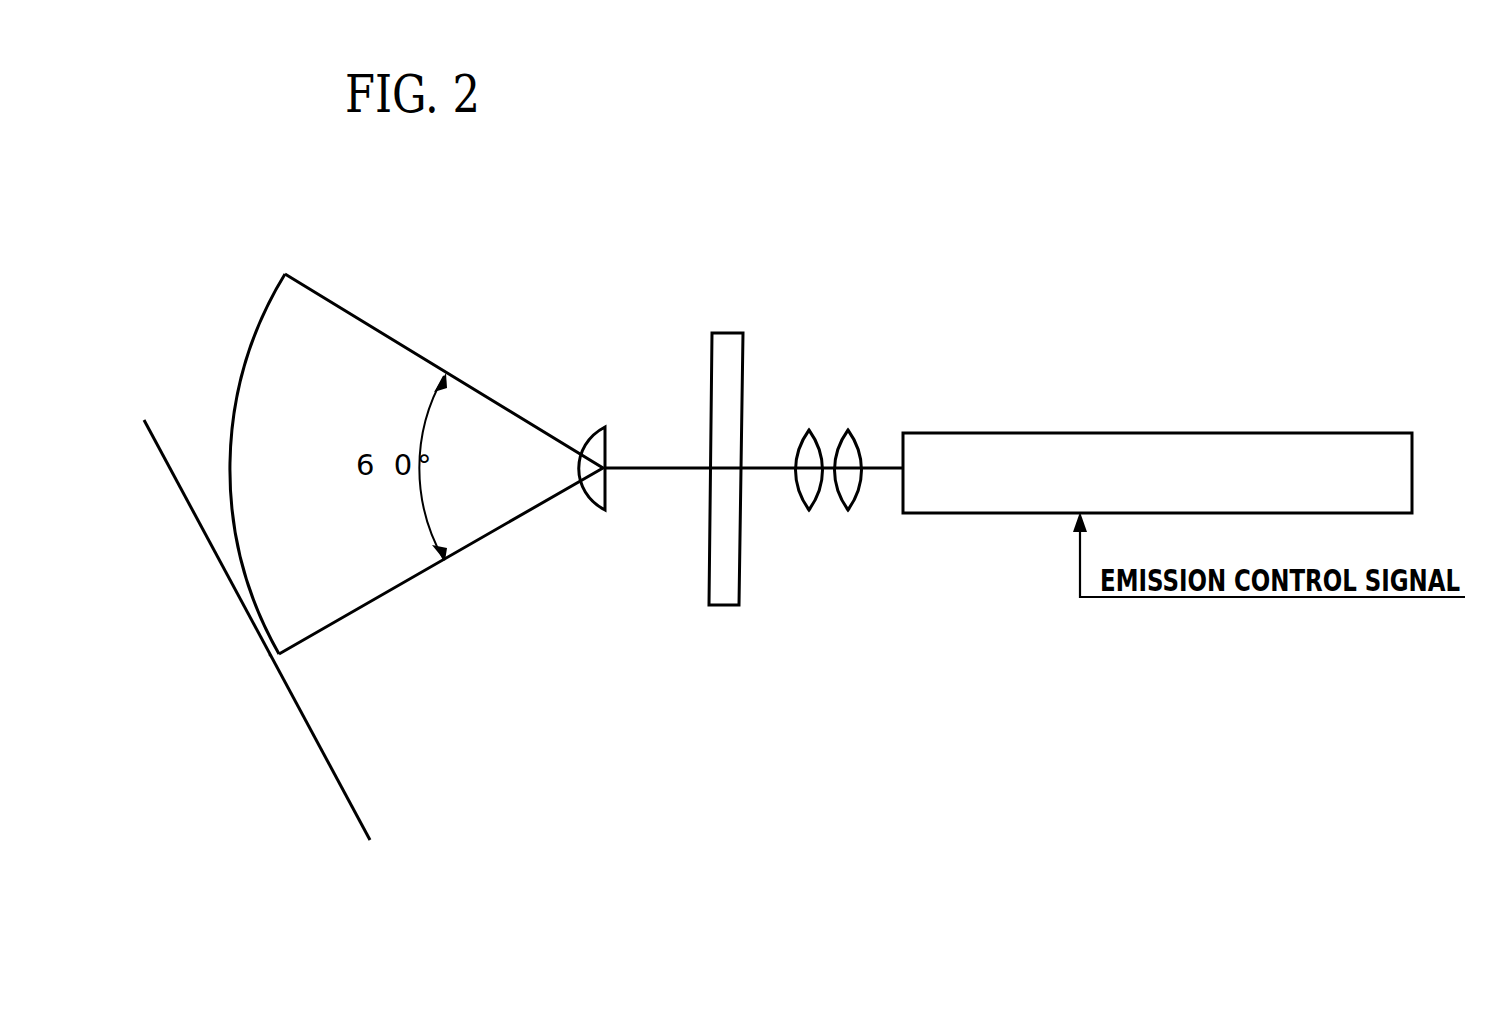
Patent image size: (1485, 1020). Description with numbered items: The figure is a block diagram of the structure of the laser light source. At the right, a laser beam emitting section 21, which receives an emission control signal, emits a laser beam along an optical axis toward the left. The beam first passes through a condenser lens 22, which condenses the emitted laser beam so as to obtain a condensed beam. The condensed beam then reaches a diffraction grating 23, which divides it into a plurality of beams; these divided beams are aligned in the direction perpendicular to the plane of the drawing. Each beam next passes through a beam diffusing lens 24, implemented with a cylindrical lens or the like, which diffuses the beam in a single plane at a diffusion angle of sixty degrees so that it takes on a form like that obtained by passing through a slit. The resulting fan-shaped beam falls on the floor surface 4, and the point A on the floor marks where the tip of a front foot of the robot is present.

The laser beam emitting section 21 is at (1055, 433).
The condenser lens 22 is at (806, 434).
The diffraction grating 23 is at (741, 591).
The beam diffusing lens 24 is at (603, 427).
The floor surface 4 is at (340, 783).
The point on the floor A is at (258, 672).